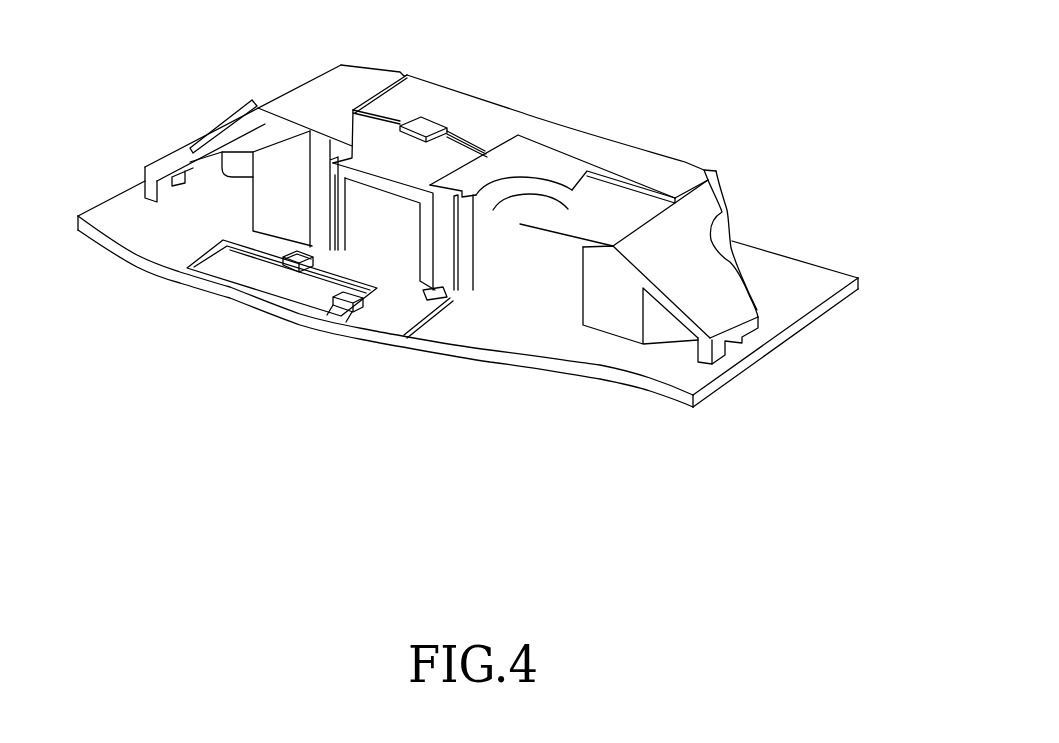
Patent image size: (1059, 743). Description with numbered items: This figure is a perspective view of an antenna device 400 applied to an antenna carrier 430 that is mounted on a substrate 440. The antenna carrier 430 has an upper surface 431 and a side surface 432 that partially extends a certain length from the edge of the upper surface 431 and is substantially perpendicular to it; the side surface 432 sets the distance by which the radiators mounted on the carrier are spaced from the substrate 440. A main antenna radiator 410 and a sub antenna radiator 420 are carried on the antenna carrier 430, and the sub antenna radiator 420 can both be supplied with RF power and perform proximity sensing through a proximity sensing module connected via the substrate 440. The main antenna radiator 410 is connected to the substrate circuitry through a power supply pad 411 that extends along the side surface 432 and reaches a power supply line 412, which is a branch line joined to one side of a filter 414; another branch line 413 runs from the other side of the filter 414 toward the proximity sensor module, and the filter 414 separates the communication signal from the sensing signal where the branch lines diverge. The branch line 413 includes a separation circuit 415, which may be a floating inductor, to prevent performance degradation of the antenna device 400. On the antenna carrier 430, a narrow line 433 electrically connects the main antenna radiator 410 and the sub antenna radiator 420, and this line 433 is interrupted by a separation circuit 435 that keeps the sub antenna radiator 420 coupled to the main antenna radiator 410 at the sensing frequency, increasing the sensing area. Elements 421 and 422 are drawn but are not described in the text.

The antenna device 400 is at (735, 97).
The main antenna radiator 410 is at (357, 78).
The power supply pad 411 is at (287, 253).
The power supply line 412 is at (208, 260).
The branch line 413 is at (322, 268).
The filter 414 is at (298, 264).
The separation circuit 415 is at (363, 308).
The sub antenna radiator 420 is at (563, 163).
The tab 421 is at (447, 297).
The bar 422 is at (428, 317).
The antenna carrier 430 is at (523, 108).
The upper surface 431 is at (579, 137).
The side surface 432 is at (608, 314).
The line 433 is at (468, 150).
The separation circuit 435 is at (430, 123).
The substrate 440 is at (803, 277).